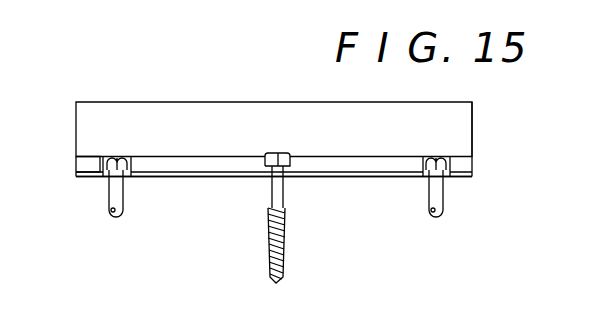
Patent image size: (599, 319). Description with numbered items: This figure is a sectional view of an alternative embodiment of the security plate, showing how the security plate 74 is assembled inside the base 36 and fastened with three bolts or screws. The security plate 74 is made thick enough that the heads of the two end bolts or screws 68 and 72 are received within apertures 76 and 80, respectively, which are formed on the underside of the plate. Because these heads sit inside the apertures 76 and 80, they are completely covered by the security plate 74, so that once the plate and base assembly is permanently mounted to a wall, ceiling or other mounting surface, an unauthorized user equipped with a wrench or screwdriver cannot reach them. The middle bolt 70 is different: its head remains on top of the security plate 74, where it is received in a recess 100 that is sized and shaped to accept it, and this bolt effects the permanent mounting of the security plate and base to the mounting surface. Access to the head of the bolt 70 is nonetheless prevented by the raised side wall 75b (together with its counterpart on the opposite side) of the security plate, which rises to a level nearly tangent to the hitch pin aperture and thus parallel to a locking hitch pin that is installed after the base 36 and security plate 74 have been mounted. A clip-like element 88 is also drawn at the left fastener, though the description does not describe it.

The recess 100 is at (274, 129).
The raised side wall 75b is at (473, 118).
The security plate 74 is at (473, 163).
The aperture 76 is at (464, 177).
The base 36 is at (352, 178).
The aperture 80 is at (93, 178).
The clip 88 is at (120, 138).
The bolt or screw 72 is at (124, 200).
The bolt or screw 68 is at (443, 200).
The bolt 70 is at (284, 248).